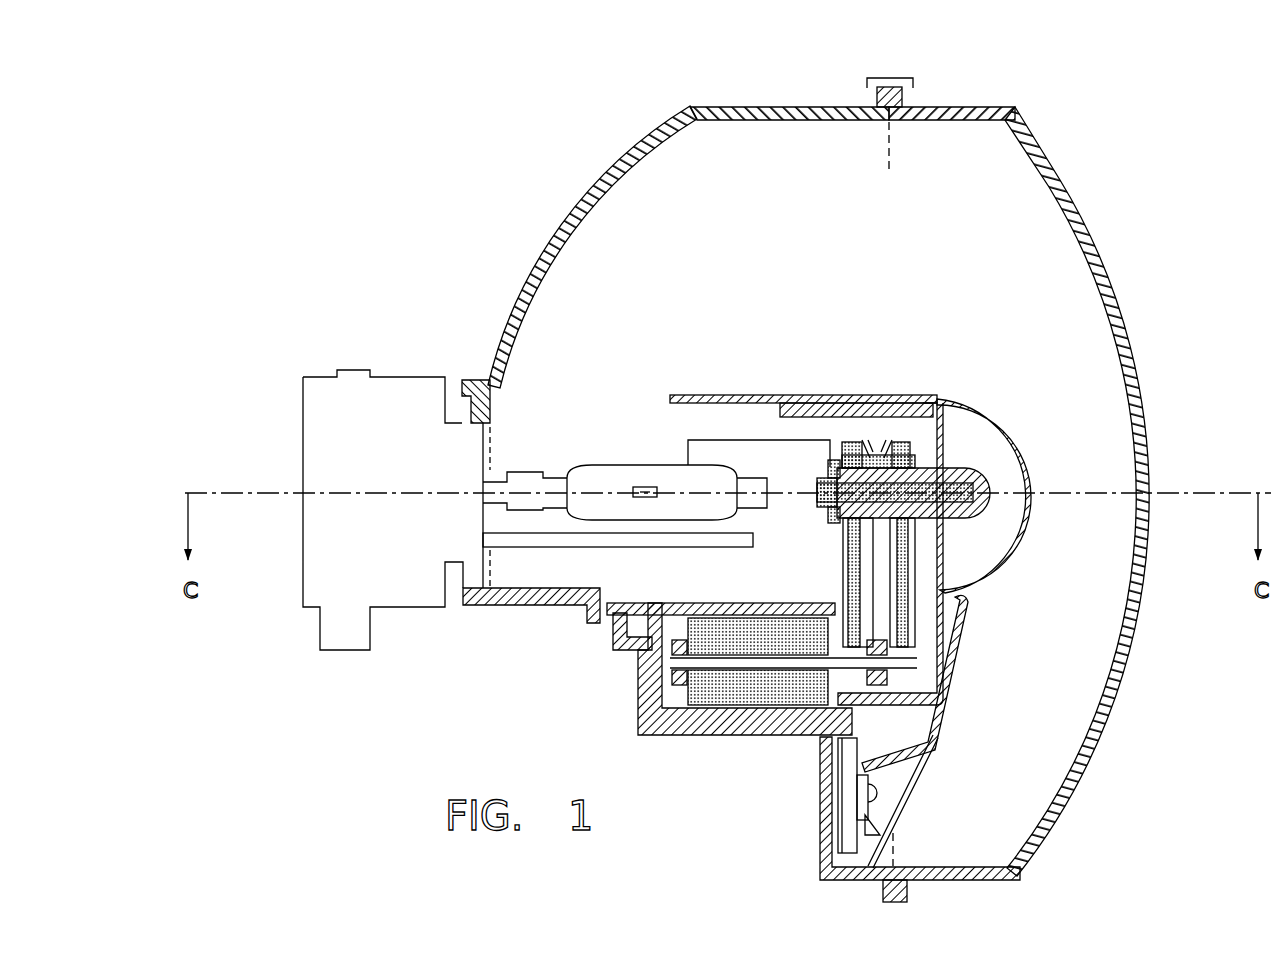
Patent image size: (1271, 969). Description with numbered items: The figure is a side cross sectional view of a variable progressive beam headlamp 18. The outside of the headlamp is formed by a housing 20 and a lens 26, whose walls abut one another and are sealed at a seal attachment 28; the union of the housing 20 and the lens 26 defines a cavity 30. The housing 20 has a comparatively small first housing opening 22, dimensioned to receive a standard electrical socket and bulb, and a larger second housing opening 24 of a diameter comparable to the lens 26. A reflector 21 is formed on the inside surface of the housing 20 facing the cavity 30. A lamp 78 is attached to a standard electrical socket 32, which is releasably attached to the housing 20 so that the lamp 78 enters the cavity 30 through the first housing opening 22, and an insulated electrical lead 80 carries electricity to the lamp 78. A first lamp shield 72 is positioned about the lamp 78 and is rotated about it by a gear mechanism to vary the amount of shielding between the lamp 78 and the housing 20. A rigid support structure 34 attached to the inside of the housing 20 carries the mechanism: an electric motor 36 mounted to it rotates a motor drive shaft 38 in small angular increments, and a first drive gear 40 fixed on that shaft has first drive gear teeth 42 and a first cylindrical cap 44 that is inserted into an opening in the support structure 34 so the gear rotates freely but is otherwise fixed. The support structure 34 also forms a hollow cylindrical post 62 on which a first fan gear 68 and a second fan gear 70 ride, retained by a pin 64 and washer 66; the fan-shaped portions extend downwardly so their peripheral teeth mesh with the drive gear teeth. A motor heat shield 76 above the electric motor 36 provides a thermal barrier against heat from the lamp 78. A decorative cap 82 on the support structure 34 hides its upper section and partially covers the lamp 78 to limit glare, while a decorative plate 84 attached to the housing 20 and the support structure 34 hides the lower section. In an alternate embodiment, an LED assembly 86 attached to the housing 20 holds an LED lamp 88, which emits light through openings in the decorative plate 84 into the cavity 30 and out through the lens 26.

The variable progressive beam headlamp 18 is at (557, 127).
The housing 20 is at (560, 240).
The reflector 21 is at (535, 325).
The first housing opening 22 is at (542, 460).
The second housing opening 24 is at (950, 170).
The lens 26 is at (1065, 190).
The seal attachment 28 is at (905, 78).
The cavity 30 is at (850, 248).
The electrical socket 32 is at (303, 540).
The support structure 34 is at (935, 548).
The electric motor 36 is at (720, 735).
The motor drive shaft 38 is at (672, 660).
The first drive gear 40 is at (878, 800).
The first drive gear teeth 42 is at (830, 757).
The first cylindrical cap 44 is at (878, 690).
The hollow cylindrical post 62 is at (995, 492).
The pin 64 is at (825, 483).
The washer 66 is at (868, 445).
The first fan gear 68 is at (900, 442).
The second fan gear 70 is at (905, 410).
The first lamp shield 72 is at (722, 397).
The motor heat shield 76 is at (800, 603).
The lamp 78 is at (655, 465).
The insulated electrical lead 80 is at (592, 545).
The decorative cap 82 is at (1003, 425).
The decorative plate 84 is at (945, 682).
The LED assembly 86 is at (830, 800).
The LED lamp 88 is at (1020, 858).